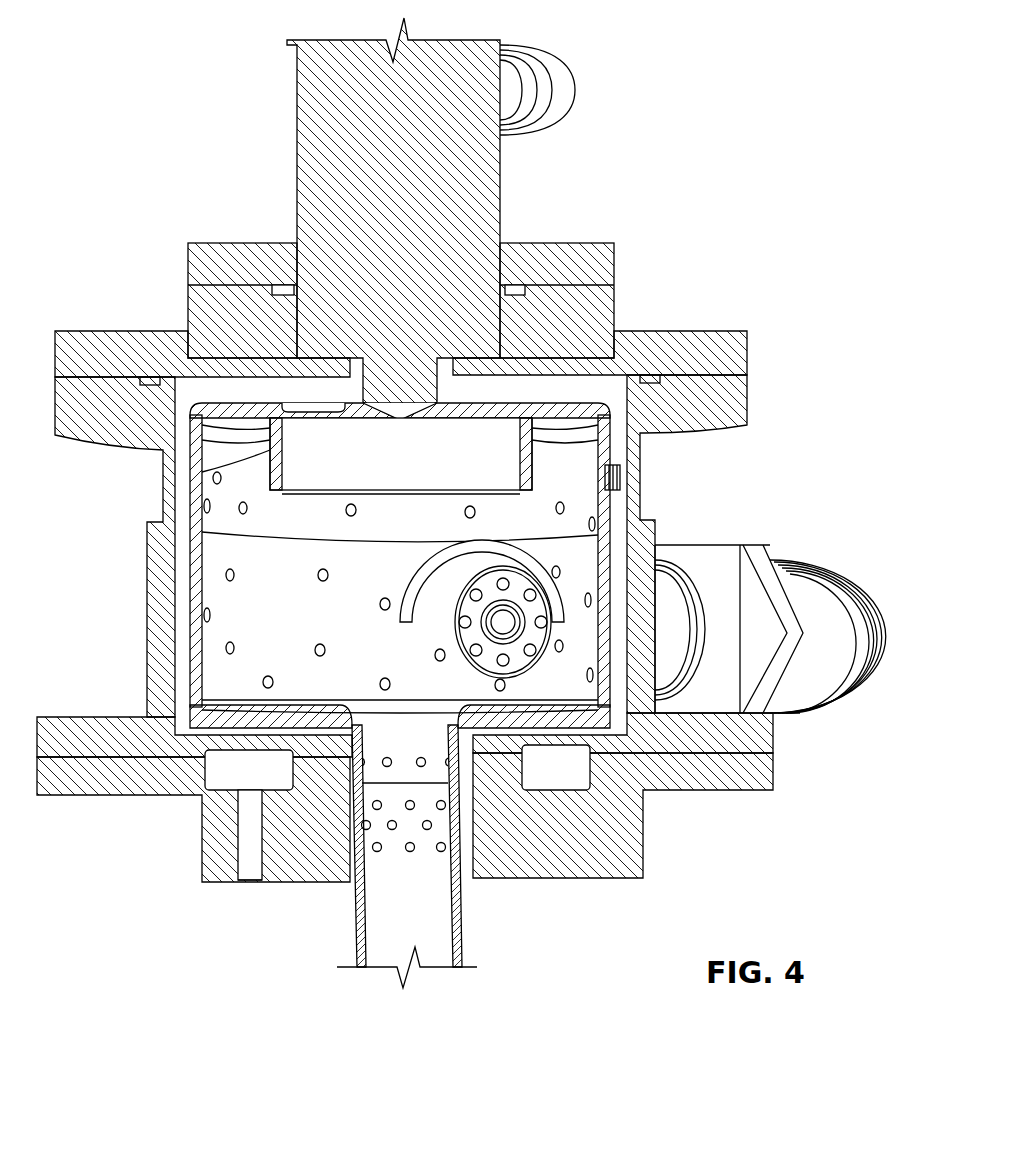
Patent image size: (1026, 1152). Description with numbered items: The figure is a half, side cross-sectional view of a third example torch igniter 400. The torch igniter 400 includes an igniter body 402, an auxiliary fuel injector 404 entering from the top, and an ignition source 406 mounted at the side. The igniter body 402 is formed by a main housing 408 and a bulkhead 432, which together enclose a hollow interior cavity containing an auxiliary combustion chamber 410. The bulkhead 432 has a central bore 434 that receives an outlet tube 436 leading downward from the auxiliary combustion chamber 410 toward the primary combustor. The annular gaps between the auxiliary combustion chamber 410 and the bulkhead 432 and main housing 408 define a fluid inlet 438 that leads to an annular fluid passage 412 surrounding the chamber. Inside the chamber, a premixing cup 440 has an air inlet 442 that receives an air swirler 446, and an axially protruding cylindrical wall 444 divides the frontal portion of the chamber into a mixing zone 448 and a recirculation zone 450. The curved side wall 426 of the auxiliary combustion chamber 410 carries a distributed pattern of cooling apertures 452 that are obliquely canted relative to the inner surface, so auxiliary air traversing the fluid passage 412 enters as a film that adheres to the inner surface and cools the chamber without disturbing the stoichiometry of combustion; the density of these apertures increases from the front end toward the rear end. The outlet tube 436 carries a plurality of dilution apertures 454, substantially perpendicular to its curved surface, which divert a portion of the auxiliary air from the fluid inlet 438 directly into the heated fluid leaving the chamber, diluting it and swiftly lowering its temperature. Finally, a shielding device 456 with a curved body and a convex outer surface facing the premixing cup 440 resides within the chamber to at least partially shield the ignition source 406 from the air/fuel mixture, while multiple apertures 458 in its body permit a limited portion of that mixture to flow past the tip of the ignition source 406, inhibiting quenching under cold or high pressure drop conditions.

The torch igniter 400 is at (632, 52).
The igniter body 402 is at (638, 264).
The auxiliary fuel injector 404 is at (455, 213).
The ignition source 406 is at (815, 567).
The main housing 408 is at (658, 533).
The auxiliary combustion chamber 410 is at (199, 588).
The fluid passage 412 is at (185, 548).
The curved side wall 426 is at (192, 625).
The bulkhead 432 is at (640, 845).
The central bore 434 is at (458, 860).
The outlet tube 436 is at (352, 900).
The fluid inlet 438 is at (460, 890).
The premixing cup 440 is at (622, 492).
The air inlet 442 is at (197, 348).
The axially protruding cylindrical wall 444 is at (268, 450).
The air swirler 446 is at (318, 408).
The mixing zone 448 is at (401, 456).
The recirculation zone 450 is at (590, 473).
The cooling apertures 452 is at (227, 650).
The dilution apertures 454 is at (427, 830).
The shielding device 456 is at (566, 589).
The apertures 458 is at (522, 564).